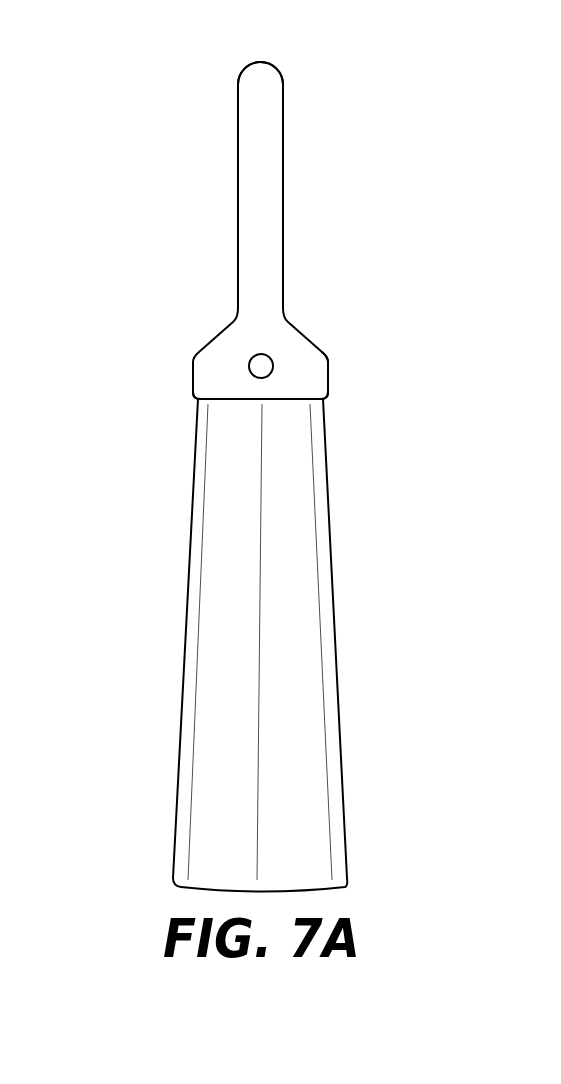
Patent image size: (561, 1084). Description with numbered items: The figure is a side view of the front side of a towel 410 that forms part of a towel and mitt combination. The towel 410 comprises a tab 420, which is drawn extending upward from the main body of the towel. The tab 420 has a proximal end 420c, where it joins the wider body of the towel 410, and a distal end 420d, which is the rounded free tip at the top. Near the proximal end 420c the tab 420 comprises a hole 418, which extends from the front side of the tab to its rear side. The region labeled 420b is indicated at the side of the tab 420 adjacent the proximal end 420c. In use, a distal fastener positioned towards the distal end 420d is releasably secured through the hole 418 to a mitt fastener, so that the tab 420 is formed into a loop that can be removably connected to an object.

The towel 410 is at (357, 90).
The tab 420 is at (258, 289).
The hole 418 is at (252, 357).
The head side portion 420b is at (328, 378).
The proximal end 420c is at (232, 400).
The distal end 420d is at (256, 60).